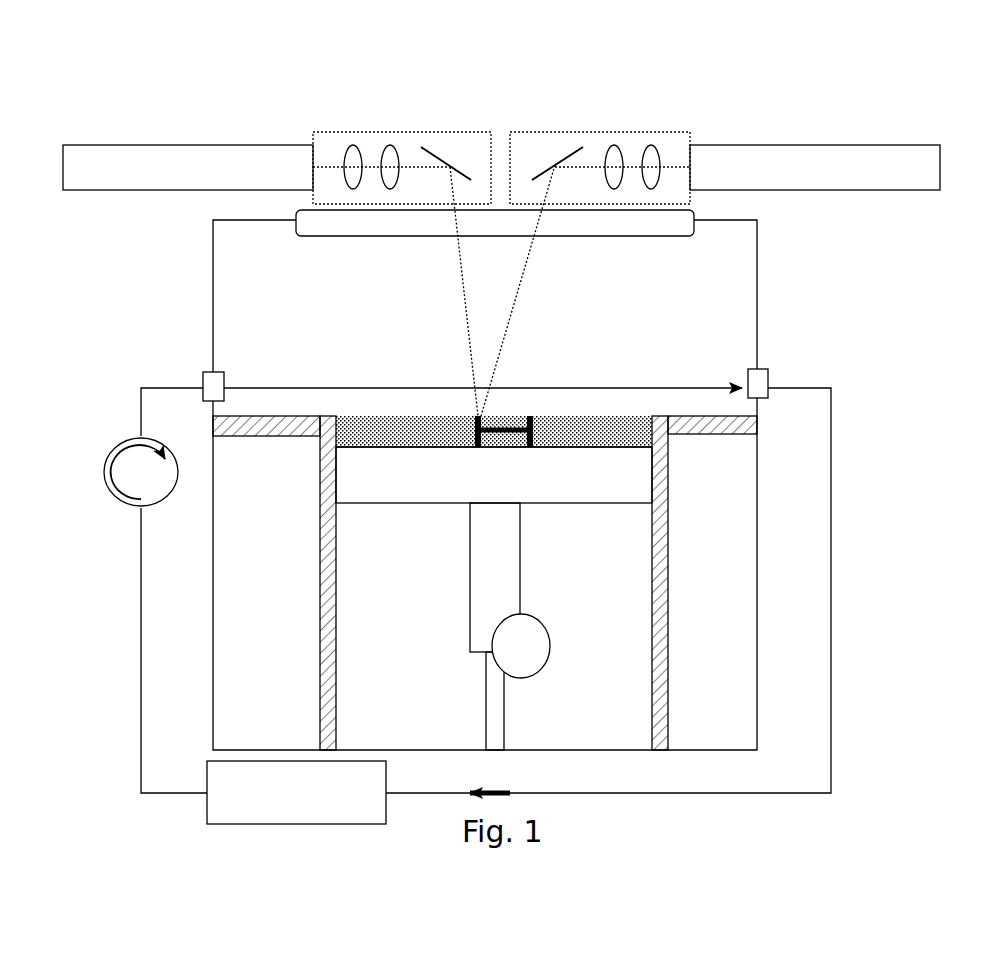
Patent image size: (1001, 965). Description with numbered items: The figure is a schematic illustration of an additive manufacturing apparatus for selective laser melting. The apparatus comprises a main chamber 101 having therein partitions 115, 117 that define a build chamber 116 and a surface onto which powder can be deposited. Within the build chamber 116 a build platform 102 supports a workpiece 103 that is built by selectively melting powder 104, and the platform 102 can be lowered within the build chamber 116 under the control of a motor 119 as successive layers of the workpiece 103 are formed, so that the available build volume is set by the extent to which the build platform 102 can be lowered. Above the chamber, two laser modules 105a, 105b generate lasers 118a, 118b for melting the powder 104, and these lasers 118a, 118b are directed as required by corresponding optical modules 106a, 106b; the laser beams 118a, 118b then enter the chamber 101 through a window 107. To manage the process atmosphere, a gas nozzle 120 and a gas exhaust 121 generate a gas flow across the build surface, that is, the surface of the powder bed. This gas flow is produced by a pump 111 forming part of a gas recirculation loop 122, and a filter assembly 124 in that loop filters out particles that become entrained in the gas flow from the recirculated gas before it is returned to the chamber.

The main chamber 101 is at (210, 340).
The build platform 102 is at (622, 485).
The workpiece 103 is at (410, 452).
The powder 104 is at (366, 440).
The laser module 105a is at (182, 146).
The laser module 105b is at (822, 146).
The optical module 106a is at (388, 132).
The optical module 106b is at (623, 132).
The window 107 is at (397, 228).
The pump 111 is at (117, 450).
The partition 115 is at (700, 431).
The build chamber 116 is at (362, 577).
The partition 117 is at (345, 680).
The laser 118a is at (455, 293).
The laser 118b is at (520, 273).
The motor 119 is at (527, 643).
The gas nozzle 120 is at (228, 380).
The gas exhaust 121 is at (745, 362).
The gas recirculation loop 122 is at (836, 583).
The filter assembly 124 is at (338, 826).